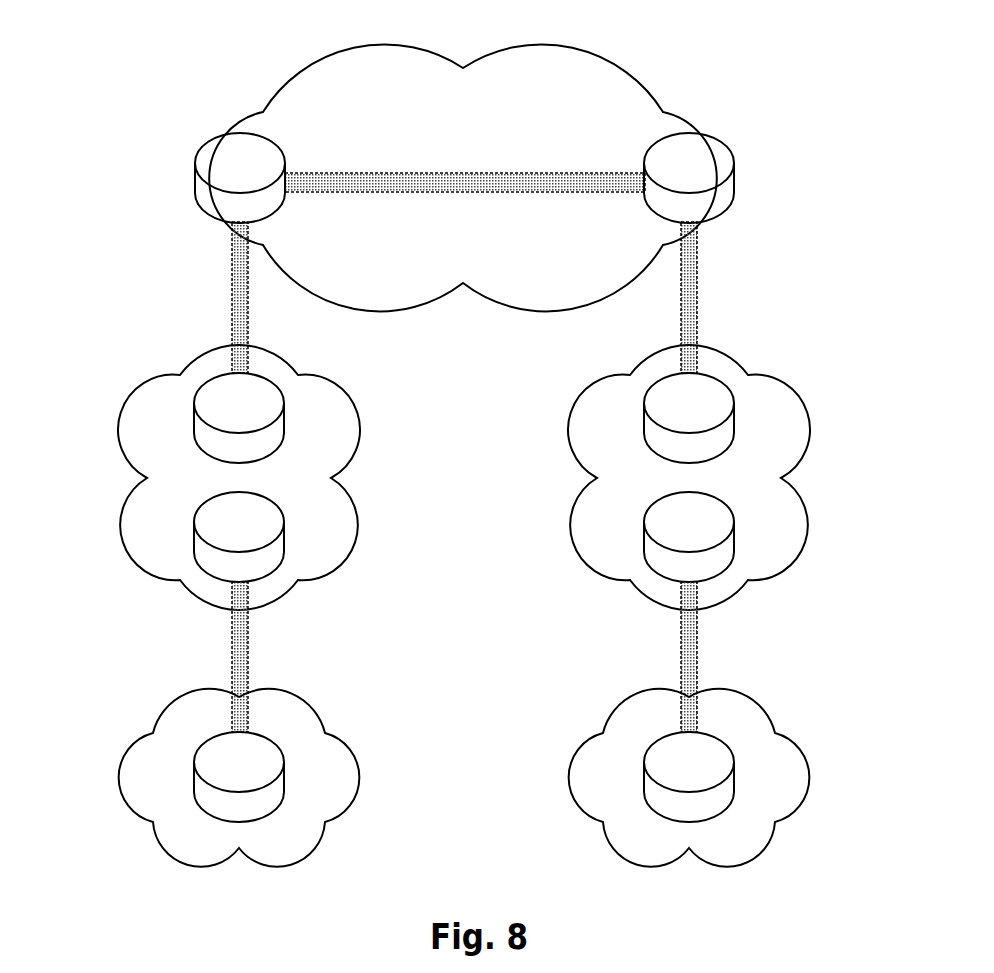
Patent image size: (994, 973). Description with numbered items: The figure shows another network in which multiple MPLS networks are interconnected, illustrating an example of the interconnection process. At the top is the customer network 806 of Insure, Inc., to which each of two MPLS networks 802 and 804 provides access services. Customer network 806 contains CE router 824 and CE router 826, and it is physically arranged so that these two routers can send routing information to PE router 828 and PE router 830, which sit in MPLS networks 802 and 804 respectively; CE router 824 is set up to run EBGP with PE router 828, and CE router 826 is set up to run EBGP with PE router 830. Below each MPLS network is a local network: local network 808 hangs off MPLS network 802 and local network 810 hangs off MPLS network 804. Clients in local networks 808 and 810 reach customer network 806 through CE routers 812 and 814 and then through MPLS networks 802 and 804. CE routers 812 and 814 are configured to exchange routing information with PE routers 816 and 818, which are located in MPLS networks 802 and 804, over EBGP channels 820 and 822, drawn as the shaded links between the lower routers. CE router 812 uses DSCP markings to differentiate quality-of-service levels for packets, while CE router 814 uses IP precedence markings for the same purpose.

The customer network 806 is at (463, 68).
The CE router 824 is at (285, 195).
The CE router 826 is at (645, 195).
The MPLS network 802 is at (119, 438).
The MPLS network 804 is at (809, 438).
The PE router 828 is at (284, 418).
The PE router 816 is at (284, 538).
The PE router 830 is at (644, 418).
The PE router 818 is at (644, 538).
The EBGP channel 820 is at (232, 658).
The EBGP channel 822 is at (697, 658).
The local network 808 is at (118, 778).
The local network 810 is at (809, 778).
The CE router 812 is at (284, 778).
The CE router 814 is at (644, 778).